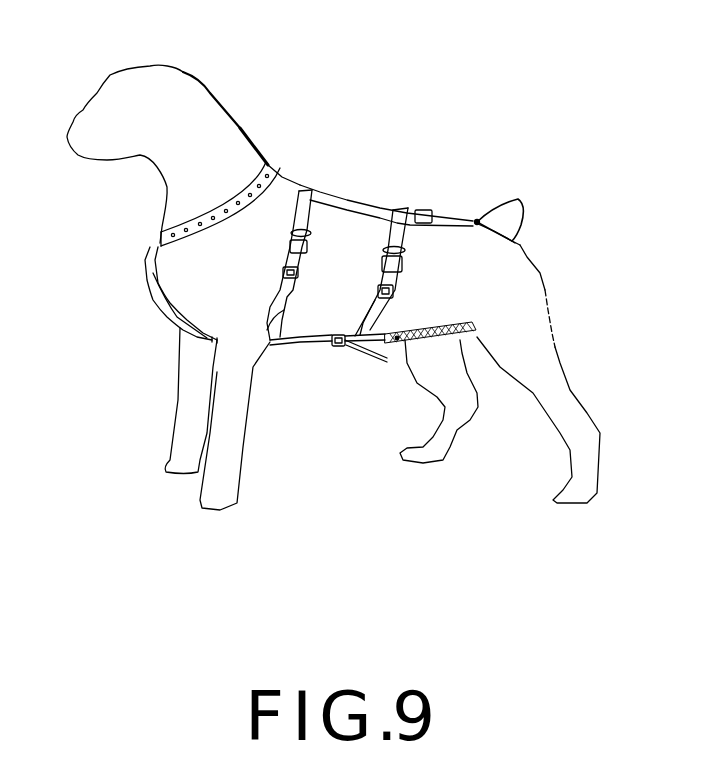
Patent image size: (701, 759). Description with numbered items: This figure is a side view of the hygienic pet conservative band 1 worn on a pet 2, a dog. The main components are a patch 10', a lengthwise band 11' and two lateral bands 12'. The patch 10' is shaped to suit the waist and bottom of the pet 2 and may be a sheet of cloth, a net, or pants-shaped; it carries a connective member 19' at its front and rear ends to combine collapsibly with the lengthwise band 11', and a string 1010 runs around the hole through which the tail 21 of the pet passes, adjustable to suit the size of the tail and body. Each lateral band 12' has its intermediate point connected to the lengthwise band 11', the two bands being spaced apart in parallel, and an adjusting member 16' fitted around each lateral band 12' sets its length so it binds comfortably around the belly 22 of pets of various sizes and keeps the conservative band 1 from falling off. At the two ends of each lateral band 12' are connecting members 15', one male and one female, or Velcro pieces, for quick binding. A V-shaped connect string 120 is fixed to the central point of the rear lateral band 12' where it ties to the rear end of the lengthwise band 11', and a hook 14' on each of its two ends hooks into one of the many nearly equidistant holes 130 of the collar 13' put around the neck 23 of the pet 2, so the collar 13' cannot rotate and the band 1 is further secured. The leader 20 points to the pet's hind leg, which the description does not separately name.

The conservative band 1 is at (443, 198).
The pet 2 is at (172, 66).
The patch 10' is at (409, 382).
The lengthwise band 11' is at (386, 187).
The lateral bands 12' is at (371, 303).
The collar 13' is at (141, 291).
The hook 14' is at (82, 277).
The connecting members 15' is at (373, 268).
The adjusting member 16' is at (330, 279).
The connective member 19' is at (457, 265).
The hind leg 20 is at (558, 343).
The tail 21 is at (511, 212).
The belly 22 is at (313, 317).
The neck 23 is at (173, 200).
The V-shaped connect string 120 is at (180, 328).
The holes 130 is at (270, 163).
The string 1010 is at (511, 236).